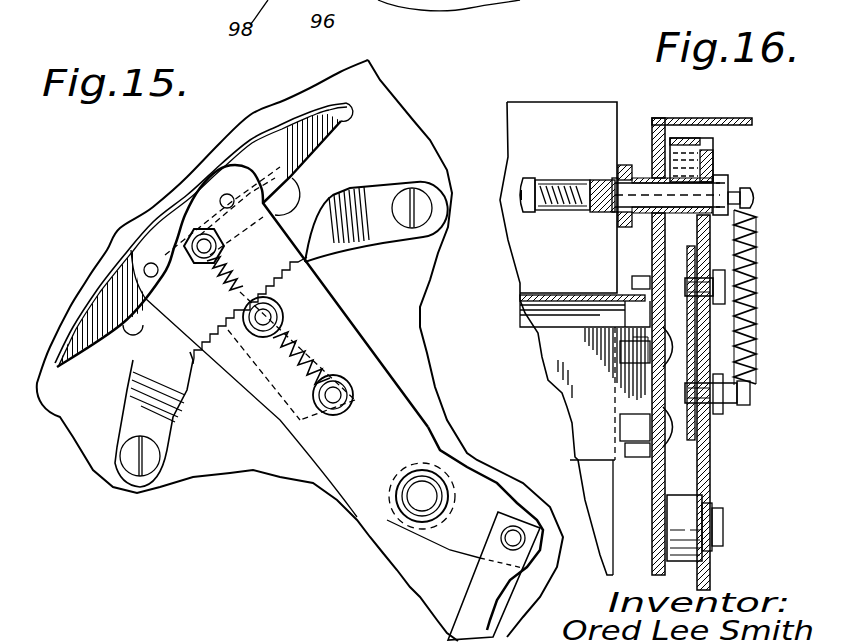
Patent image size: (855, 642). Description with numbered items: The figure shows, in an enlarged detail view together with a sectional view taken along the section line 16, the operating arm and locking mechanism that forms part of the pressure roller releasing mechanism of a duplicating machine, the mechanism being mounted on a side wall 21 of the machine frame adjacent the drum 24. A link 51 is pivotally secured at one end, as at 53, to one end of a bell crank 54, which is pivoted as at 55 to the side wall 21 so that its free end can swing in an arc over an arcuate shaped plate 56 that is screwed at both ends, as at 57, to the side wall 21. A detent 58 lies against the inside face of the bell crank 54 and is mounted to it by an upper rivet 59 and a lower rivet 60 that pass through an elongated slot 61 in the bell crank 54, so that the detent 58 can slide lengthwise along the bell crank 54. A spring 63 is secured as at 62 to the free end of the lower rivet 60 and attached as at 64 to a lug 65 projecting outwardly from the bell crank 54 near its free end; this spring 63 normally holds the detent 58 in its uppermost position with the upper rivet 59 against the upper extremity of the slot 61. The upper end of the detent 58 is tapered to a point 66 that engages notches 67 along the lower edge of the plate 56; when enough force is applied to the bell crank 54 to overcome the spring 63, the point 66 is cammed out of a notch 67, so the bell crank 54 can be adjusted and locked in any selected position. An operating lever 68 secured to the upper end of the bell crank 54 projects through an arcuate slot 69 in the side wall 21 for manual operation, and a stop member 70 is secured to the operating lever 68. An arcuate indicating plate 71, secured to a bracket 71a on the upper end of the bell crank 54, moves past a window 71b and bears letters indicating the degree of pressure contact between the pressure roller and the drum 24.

In FIG. 15, the section line 16 is at (146, 162).
In FIG. 15, the side wall 21 is at (412, 128).
In FIG. 16, the side wall 21 is at (658, 463).
In FIG. 16, the drum 24 is at (560, 107).
In FIG. 15, the link 51 is at (443, 620).
In FIG. 15, the pivot connection 53 is at (517, 535).
In FIG. 15, the bell crank 54 is at (402, 411).
In FIG. 16, the bell crank 54 is at (707, 470).
In FIG. 15, the pivot point 55 is at (408, 495).
In FIG. 16, the pivot point 55 is at (720, 518).
In FIG. 15, the arcuate shaped plate 56 is at (143, 368).
In FIG. 16, the arcuate shaped plate 56 is at (700, 217).
In FIG. 15, the screws 57 is at (428, 177).
In FIG. 15, the detent 58 is at (295, 395).
In FIG. 16, the detent 58 is at (703, 324).
In FIG. 15, the upper rivet 59 is at (275, 300).
In FIG. 16, the upper rivet 59 is at (727, 282).
In FIG. 15, the lower rivet 60 is at (330, 418).
In FIG. 16, the lower rivet 60 is at (737, 410).
In FIG. 15, the elongated slot 61 is at (275, 320).
In FIG. 16, the elongated slot 61 is at (710, 432).
In FIG. 16, the spring attachment 62 is at (750, 394).
In FIG. 15, the spring 63 is at (315, 374).
In FIG. 16, the spring 63 is at (756, 238).
In FIG. 16, the spring attachment 64 is at (755, 195).
In FIG. 15, the lug 65 is at (195, 244).
In FIG. 16, the lug 65 is at (733, 190).
In FIG. 15, the point 66 is at (250, 339).
In FIG. 15, the notches 67 is at (320, 250).
In FIG. 16, the operating lever 68 is at (537, 190).
In FIG. 15, the arcuate slot 69 is at (367, 125).
In FIG. 16, the arcuate slot 69 is at (650, 178).
In FIG. 16, the stop member 70 is at (615, 168).
In FIG. 15, the indicating plate 71 is at (245, 136).
In FIG. 16, the indicating plate 71 is at (674, 138).
In FIG. 15, the bracket 71a is at (200, 239).
In FIG. 16, the window 71b is at (680, 137).